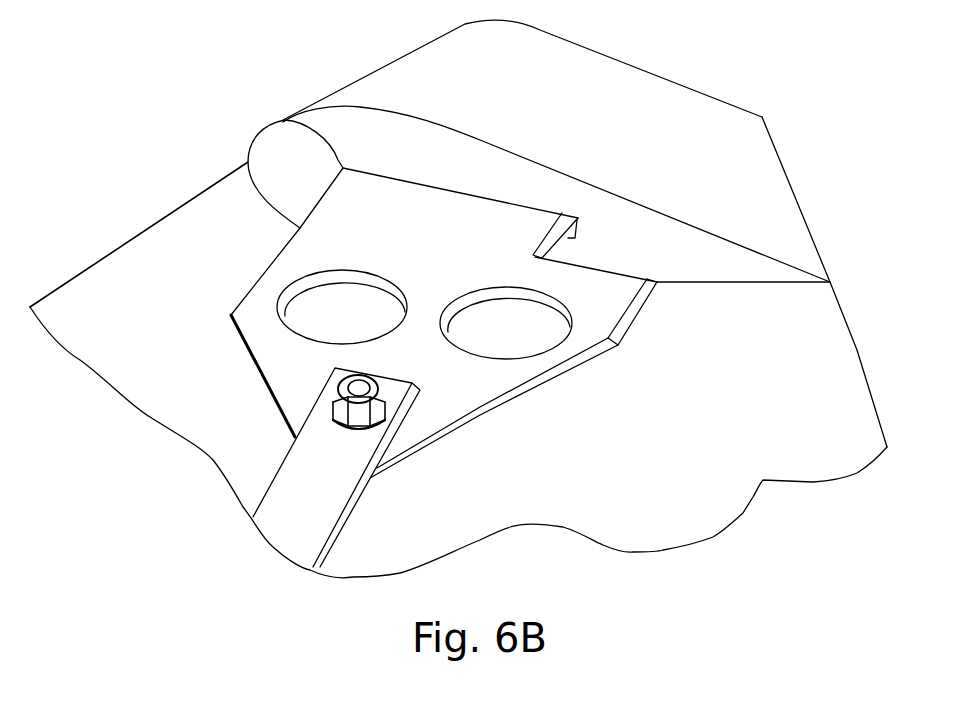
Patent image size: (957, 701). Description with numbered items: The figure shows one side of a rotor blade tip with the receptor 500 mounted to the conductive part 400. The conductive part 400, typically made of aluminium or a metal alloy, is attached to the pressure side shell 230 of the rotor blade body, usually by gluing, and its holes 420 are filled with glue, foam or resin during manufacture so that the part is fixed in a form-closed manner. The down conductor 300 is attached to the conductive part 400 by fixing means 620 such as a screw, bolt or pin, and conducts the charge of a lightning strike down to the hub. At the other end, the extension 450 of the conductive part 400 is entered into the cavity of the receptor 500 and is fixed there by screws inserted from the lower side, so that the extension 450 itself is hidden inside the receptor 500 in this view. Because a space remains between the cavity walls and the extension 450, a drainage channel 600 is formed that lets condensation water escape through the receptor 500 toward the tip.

The pressure side shell 230 is at (623, 421).
The down conductor 300 is at (331, 512).
The conductive part 400 is at (391, 366).
The holes 420 is at (367, 310).
The extension 450 is at (408, 200).
The receptor 500 is at (733, 151).
The drainage channel 600 is at (285, 120).
The fixing means 620 is at (385, 406).